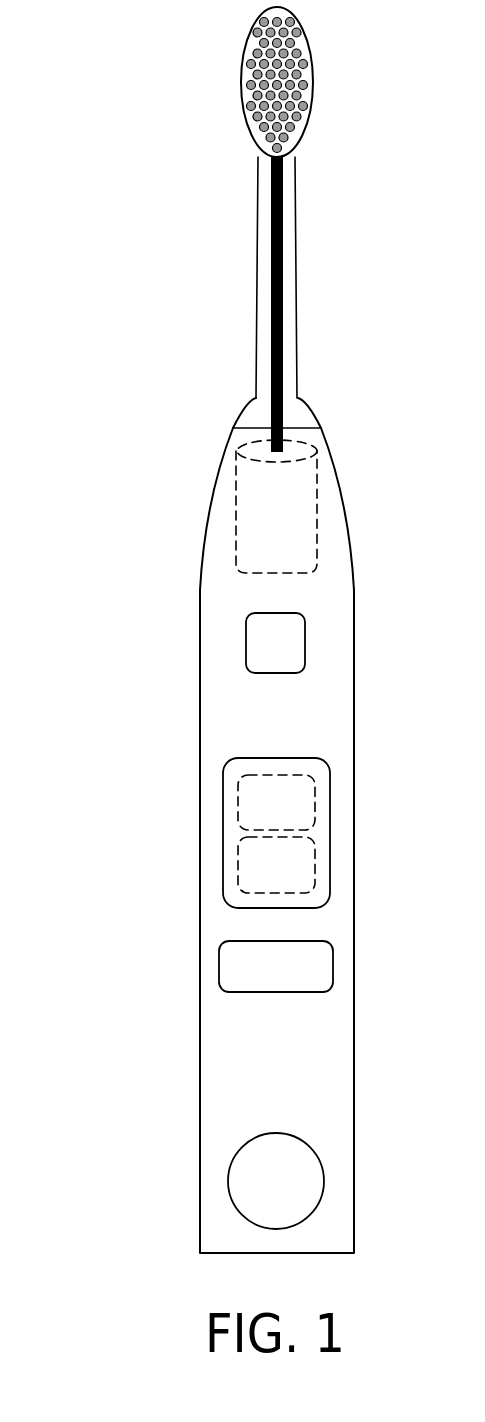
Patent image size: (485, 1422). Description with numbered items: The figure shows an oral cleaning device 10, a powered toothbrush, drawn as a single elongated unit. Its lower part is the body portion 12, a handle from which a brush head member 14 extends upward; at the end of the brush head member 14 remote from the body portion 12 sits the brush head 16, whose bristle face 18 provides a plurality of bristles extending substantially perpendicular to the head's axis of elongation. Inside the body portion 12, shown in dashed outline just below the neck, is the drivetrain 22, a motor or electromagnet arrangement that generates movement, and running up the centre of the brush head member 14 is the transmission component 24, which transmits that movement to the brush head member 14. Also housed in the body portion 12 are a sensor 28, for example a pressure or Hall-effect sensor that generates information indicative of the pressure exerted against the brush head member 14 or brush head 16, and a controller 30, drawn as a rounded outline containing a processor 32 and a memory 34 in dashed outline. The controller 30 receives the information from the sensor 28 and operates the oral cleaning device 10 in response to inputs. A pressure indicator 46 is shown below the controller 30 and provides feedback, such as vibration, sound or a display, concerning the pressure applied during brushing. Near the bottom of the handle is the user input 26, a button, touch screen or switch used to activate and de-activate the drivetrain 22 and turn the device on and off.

The oral cleaning device 10 is at (78, 95).
The body portion 12 is at (200, 597).
The brush head member 14 is at (258, 255).
The brush head 16 is at (242, 127).
The bristle face 18 is at (305, 63).
The drivetrain 22 is at (310, 514).
The transmission component 24 is at (283, 362).
The user input 26 is at (324, 1185).
The sensor 28 is at (305, 641).
The controller 30 is at (223, 830).
The processor 32 is at (315, 865).
The memory 34 is at (315, 802).
The pressure indicator 46 is at (333, 967).